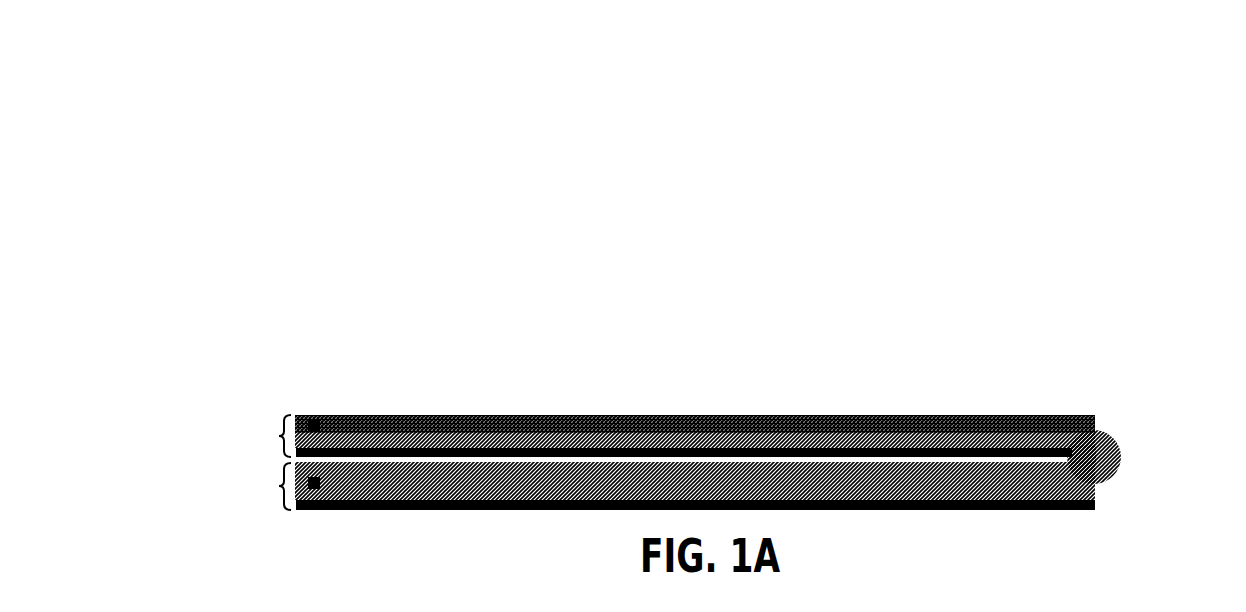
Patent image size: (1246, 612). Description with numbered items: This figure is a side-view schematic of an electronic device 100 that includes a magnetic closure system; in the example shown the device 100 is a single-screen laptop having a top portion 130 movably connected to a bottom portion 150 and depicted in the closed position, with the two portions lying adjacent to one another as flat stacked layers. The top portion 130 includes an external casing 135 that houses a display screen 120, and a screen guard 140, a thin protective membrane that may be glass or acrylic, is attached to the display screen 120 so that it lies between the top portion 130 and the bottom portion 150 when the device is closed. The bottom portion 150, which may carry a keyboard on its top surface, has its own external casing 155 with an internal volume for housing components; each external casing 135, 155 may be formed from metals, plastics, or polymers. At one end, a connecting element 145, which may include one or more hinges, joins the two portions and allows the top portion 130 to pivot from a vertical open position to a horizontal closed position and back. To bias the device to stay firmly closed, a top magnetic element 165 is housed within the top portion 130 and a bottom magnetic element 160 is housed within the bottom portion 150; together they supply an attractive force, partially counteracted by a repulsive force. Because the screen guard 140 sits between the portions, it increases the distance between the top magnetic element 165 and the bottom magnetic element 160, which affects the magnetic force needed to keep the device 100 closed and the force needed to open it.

The electronic device 100 is at (199, 66).
The display screen 120 is at (728, 436).
The top portion 130 is at (272, 427).
The external casing 135 is at (537, 415).
The screen guard 140 is at (933, 448).
The connecting element 145 is at (1110, 435).
The bottom portion 150 is at (278, 488).
The external casing 155 is at (430, 511).
The bottom magnetic element 160 is at (312, 486).
The top magnetic element 165 is at (314, 420).